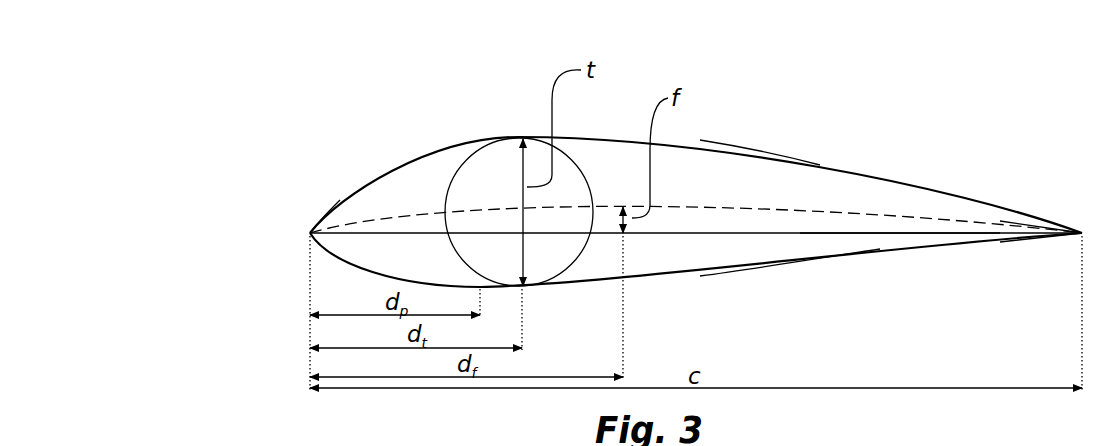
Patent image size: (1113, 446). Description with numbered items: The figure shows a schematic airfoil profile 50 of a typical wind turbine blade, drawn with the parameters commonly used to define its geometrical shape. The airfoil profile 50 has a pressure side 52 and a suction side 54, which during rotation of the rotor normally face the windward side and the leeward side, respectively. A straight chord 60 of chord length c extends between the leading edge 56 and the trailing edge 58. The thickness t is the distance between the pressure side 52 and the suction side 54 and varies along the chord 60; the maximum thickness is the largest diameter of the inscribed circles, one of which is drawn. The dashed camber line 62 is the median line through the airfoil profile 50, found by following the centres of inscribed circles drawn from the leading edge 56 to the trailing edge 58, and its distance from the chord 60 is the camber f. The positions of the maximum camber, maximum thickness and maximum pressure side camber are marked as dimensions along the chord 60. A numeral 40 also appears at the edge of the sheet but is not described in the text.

The airfoil profile 50 is at (670, 64).
The pressure side 52 is at (847, 260).
The suction side 54 is at (790, 153).
The leading edge 56 is at (310, 233).
The trailing edge 58 is at (1082, 232).
The chord 60 is at (887, 233).
The camber line 62 is at (687, 207).
The hub 40 is at (180, 445).